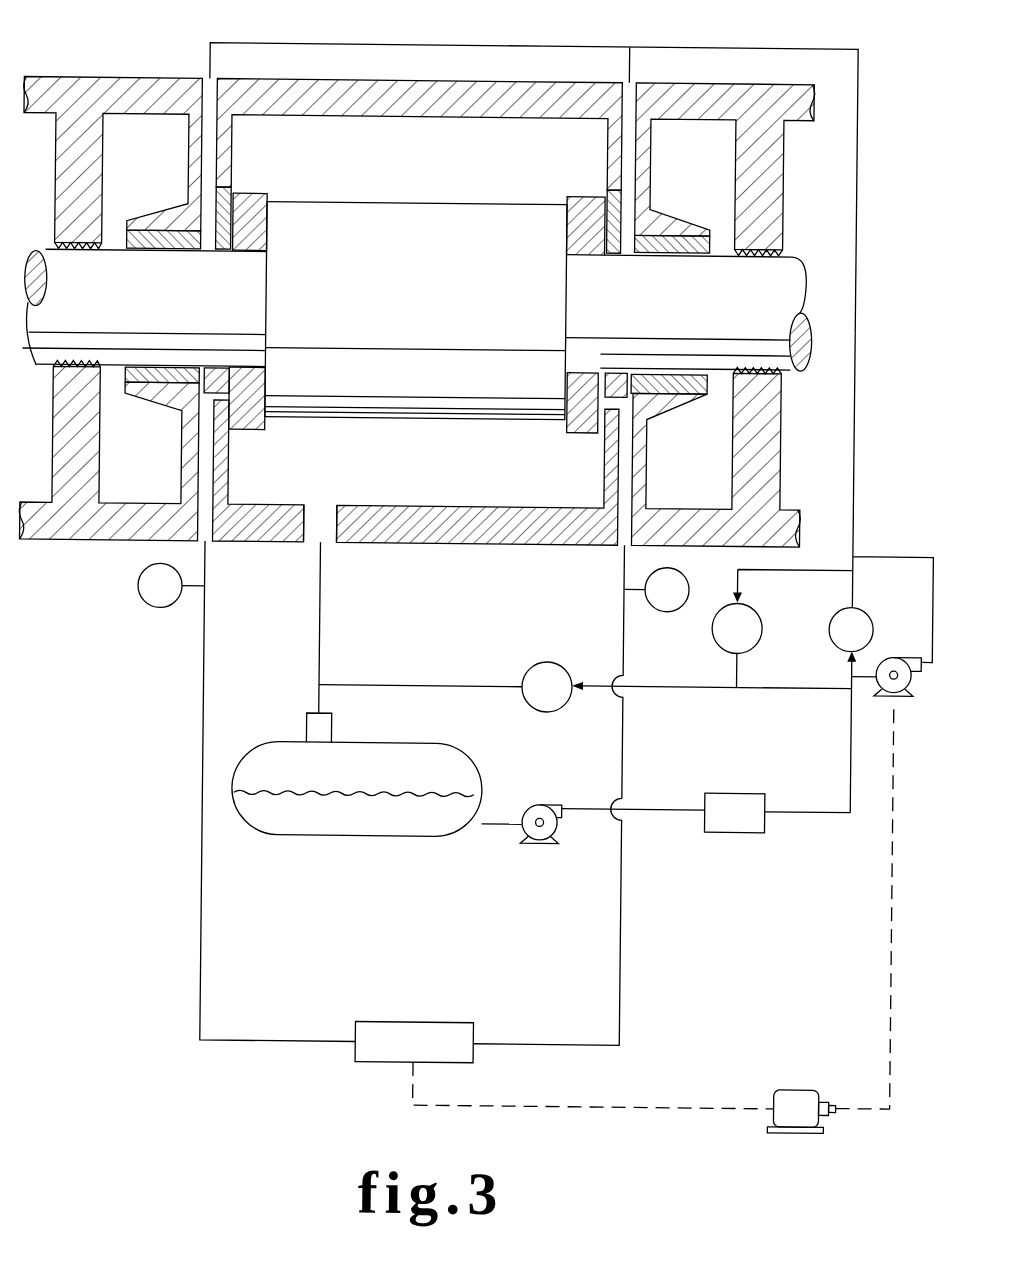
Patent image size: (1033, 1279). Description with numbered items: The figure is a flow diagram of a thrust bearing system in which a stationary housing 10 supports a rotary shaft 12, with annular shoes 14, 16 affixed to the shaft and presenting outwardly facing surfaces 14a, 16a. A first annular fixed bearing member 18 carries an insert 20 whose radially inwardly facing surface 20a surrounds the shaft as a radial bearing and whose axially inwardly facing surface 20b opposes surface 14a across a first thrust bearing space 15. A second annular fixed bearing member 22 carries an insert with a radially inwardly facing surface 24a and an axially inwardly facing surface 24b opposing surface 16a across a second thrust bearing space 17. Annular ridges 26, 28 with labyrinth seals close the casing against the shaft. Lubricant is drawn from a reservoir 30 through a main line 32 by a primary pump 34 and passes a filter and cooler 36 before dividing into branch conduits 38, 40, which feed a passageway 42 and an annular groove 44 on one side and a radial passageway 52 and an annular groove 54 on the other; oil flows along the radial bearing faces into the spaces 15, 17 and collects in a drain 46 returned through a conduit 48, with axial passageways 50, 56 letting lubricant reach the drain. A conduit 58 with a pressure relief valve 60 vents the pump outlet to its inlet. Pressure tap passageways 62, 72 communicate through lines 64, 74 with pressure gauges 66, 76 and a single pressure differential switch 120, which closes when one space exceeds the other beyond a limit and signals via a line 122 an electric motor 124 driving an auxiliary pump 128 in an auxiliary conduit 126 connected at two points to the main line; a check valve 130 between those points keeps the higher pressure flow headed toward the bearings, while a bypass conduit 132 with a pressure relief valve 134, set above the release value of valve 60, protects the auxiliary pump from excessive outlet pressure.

The stationary housing 10 is at (408, 118).
The rotary shaft 12 is at (798, 282).
The annular shoe 14 is at (265, 229).
The surface of shoe 14a is at (507, 384).
The space 15 is at (232, 260).
The annular shoe 16 is at (566, 240).
The surface of shoe 16a is at (565, 384).
The space 17 is at (602, 262).
The first annular fixed bearing member 18 is at (188, 191).
The insert 20 is at (148, 367).
The radially inwardly facing surface 20a is at (178, 252).
The axially inwardly facing surface 20b is at (226, 192).
The second annular fixed bearing member 22 is at (646, 197).
The radially inwardly facing surface 24a is at (654, 252).
The axially inwardly facing surface 24b is at (614, 194).
The annular ridge 26 is at (107, 410).
The annular ridge 28 is at (782, 482).
The lubricant reservoir 30 is at (387, 748).
The main line 32 is at (820, 812).
The primary pump 34 is at (526, 844).
The filter and cooler 36 is at (704, 812).
The branch conduit 38 is at (222, 68).
The branch conduit 40 is at (626, 72).
The passageway 42 is at (208, 153).
The annular groove 44 is at (219, 366).
The drain 46 is at (310, 509).
The conduit 48 is at (322, 632).
The axial passageway 50 is at (226, 493).
The radial passageway 52 is at (631, 144).
The annular groove 54 is at (622, 372).
The axial passageway 56 is at (620, 502).
The conduit 58 is at (794, 693).
The pressure relief valve 60 is at (526, 704).
The pressure tap passageway 62 is at (226, 438).
The line 64 is at (196, 668).
The pressure gauge 66 is at (146, 614).
The pressure tap passageway 72 is at (643, 441).
The line 74 is at (630, 962).
The pressure gauge 76 is at (666, 612).
The pressure differential switch 120 is at (384, 1063).
The line 122 is at (660, 1106).
The electric motor 124 is at (810, 1088).
The auxiliary conduit 126 is at (856, 554).
The auxiliary pump 128 is at (894, 656).
The check valve 130 is at (830, 654).
The bypass conduit 132 is at (818, 570).
The pressure relief valve 134 is at (725, 651).